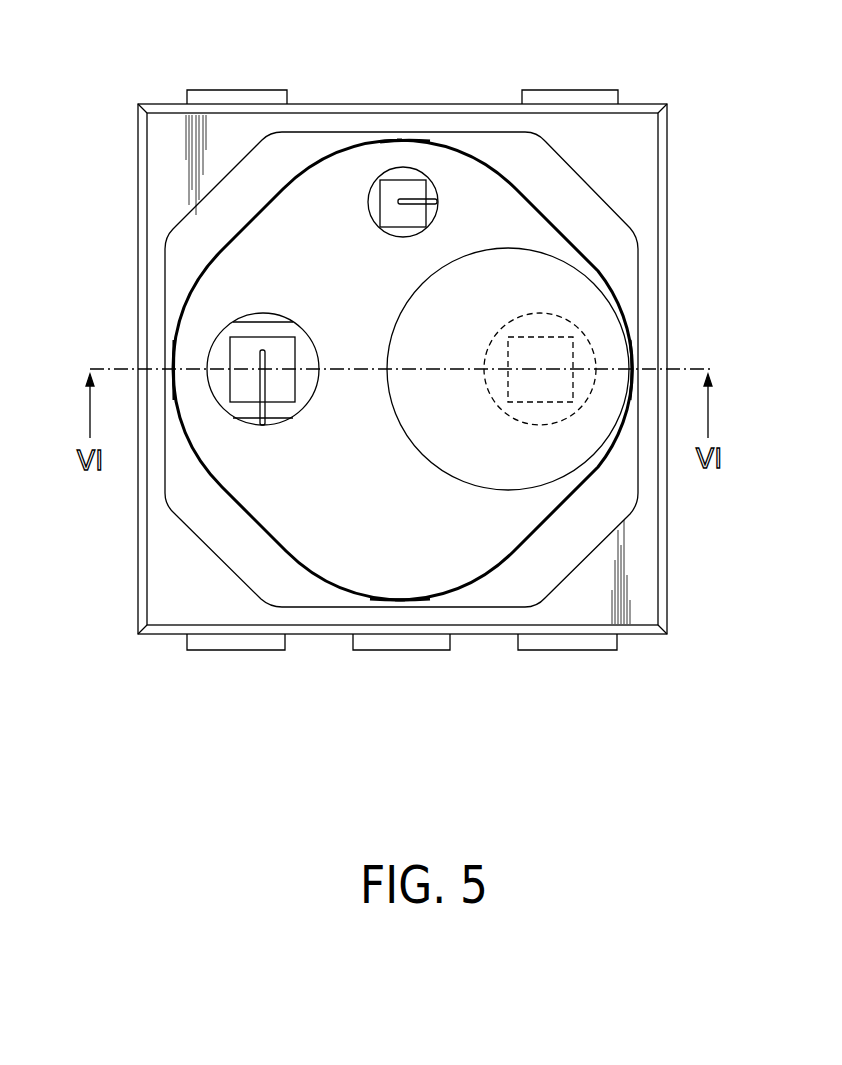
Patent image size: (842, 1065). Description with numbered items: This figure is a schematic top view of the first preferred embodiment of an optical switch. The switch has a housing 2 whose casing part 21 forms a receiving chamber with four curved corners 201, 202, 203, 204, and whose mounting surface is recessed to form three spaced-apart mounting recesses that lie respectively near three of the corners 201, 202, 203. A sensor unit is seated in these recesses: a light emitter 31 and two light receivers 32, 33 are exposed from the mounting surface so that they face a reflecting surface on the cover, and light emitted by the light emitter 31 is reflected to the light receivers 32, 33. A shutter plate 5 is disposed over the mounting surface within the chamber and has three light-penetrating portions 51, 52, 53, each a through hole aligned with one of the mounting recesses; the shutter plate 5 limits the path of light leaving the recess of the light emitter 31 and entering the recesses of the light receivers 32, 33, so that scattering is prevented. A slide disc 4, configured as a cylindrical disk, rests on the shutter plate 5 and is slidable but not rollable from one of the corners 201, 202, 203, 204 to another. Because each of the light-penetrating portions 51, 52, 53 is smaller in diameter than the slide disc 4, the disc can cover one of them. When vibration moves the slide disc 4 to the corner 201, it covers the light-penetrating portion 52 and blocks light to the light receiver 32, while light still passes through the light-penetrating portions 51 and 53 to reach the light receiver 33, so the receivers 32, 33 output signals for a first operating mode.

The housing 2 is at (137, 213).
The casing part 21 is at (313, 635).
The curved corner 201 is at (631, 360).
The curved corner 202 is at (413, 140).
The curved corner 203 is at (174, 363).
The curved corner 204 is at (397, 602).
The light emitter 31 is at (395, 188).
The light receiver 32 is at (545, 393).
The light receiver 33 is at (243, 393).
The slide disc 4 is at (483, 493).
The shutter plate 5 is at (549, 213).
The light-penetrating portion 51 is at (433, 182).
The light-penetrating portion 52 is at (575, 323).
The light-penetrating portion 53 is at (263, 313).